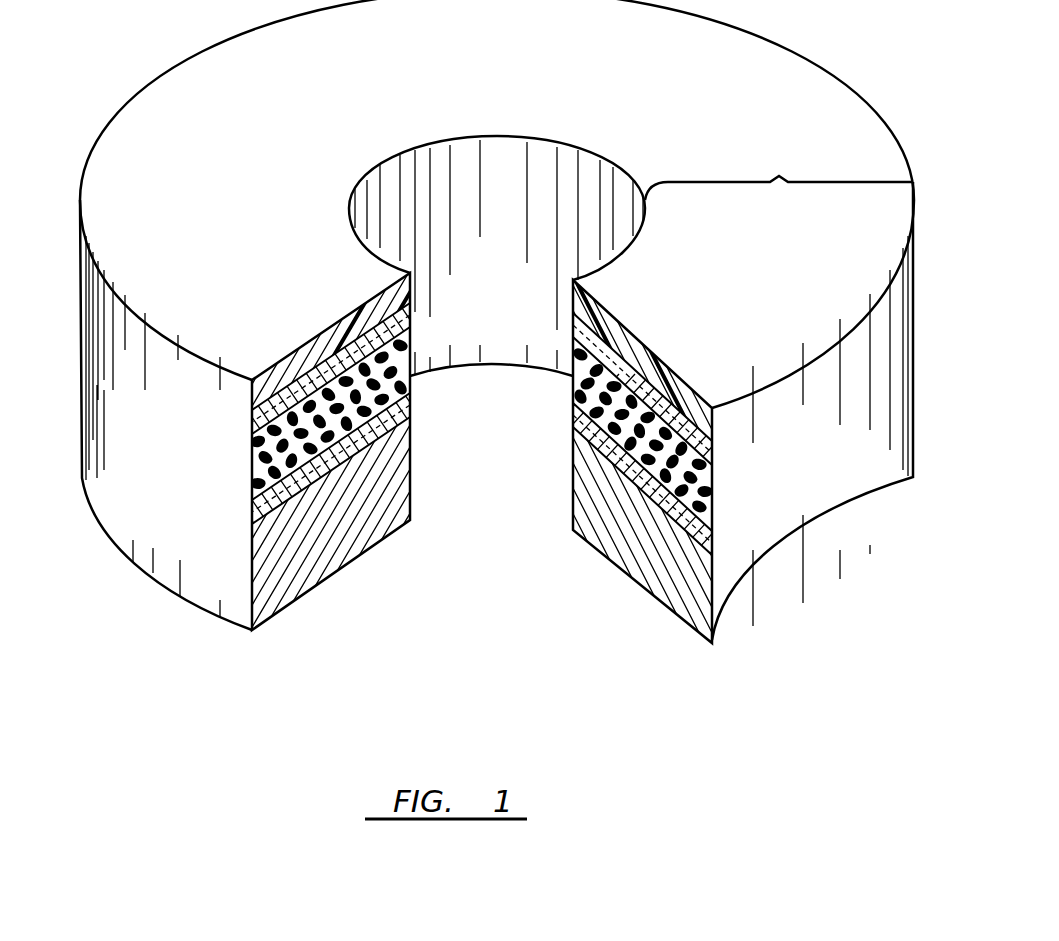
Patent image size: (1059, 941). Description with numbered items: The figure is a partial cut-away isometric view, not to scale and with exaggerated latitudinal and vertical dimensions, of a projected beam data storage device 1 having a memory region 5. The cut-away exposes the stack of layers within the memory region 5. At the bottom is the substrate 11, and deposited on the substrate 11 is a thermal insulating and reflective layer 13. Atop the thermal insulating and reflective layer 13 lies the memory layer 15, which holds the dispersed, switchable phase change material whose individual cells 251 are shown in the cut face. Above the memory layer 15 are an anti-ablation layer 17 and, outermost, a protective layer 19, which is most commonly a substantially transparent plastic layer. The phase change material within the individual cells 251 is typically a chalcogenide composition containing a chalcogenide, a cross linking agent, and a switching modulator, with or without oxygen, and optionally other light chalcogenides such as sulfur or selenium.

The projected beam data storage device 1 is at (532, 587).
The memory region 5 is at (779, 176).
The substrate 11 is at (288, 562).
The thermal insulating and reflective layer 13 is at (250, 515).
The memory layer 15 is at (250, 448).
The anti-ablation layer 17 is at (250, 421).
The protective layer 19 is at (250, 389).
The individual cells 251 is at (405, 386).